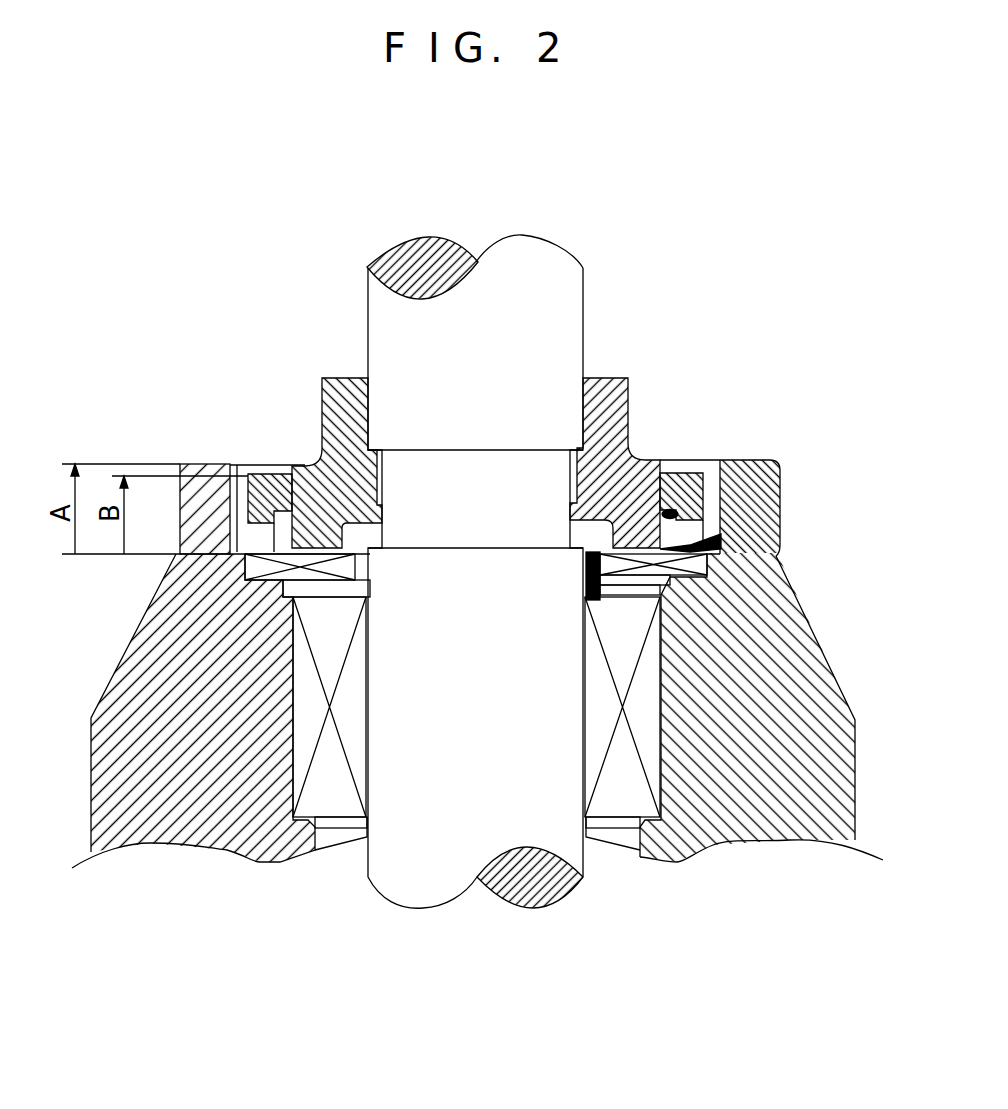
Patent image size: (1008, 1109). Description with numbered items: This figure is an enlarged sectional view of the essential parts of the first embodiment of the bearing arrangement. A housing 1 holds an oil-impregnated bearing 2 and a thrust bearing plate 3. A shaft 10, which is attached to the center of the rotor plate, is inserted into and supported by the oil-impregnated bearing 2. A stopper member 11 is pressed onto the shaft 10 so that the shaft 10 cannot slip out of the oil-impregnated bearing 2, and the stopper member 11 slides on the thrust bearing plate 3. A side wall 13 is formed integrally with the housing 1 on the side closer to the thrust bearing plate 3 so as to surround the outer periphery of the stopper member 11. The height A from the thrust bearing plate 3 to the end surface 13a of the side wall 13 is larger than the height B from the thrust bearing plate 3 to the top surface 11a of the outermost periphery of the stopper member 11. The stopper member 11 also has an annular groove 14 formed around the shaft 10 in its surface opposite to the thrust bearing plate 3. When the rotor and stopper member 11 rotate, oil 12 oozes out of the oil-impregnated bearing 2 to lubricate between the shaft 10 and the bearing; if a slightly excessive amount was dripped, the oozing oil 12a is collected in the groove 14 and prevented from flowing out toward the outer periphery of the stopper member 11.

The housing 1 is at (750, 677).
The oil-impregnated bearing 2 is at (650, 738).
The thrust bearing plate 3 is at (247, 565).
The shaft 10 is at (508, 281).
The stopper member 11 is at (603, 388).
The top surface of outermost periphery of the stopper member 11a is at (263, 466).
The oil 12 is at (583, 594).
The oil 12a is at (670, 510).
The side wall 13 is at (782, 508).
The end surface of the side wall 13a is at (205, 464).
The annular groove 14 is at (247, 582).